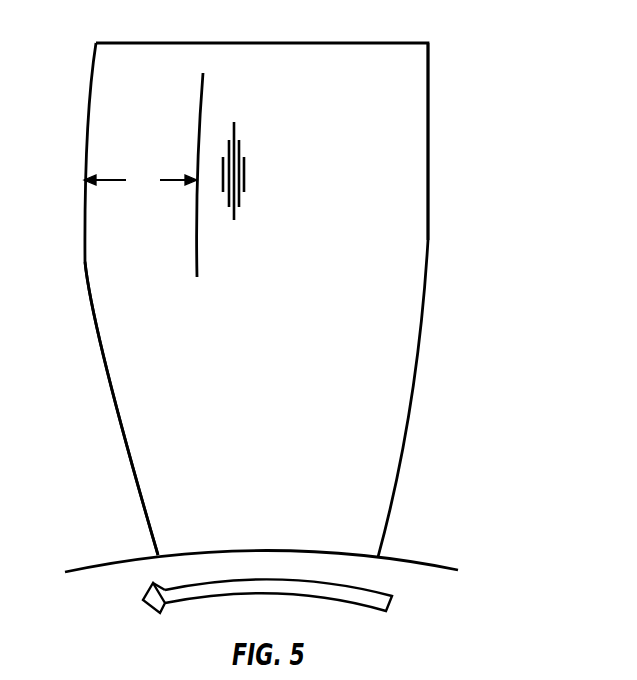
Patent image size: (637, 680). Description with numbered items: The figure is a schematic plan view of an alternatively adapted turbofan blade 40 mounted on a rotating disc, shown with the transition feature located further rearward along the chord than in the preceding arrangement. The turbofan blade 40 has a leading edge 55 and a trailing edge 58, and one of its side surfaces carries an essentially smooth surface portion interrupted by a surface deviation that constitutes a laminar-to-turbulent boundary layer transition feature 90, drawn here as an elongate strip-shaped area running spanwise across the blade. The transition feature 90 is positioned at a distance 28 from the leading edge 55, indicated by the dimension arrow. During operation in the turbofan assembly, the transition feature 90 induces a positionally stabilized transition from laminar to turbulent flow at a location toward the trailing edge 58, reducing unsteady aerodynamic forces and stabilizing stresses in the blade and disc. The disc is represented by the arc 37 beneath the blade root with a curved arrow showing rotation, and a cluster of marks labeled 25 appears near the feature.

The surface marks / indicia 25 is at (246, 173).
The distance 28 is at (140, 180).
The platform / root arc 37 is at (420, 573).
The turbofan blade 40 is at (397, 107).
The leading edge 55 is at (84, 260).
The trailing edge 58 is at (429, 175).
The laminar-to-turbulent boundary layer transition feature 90 is at (200, 104).